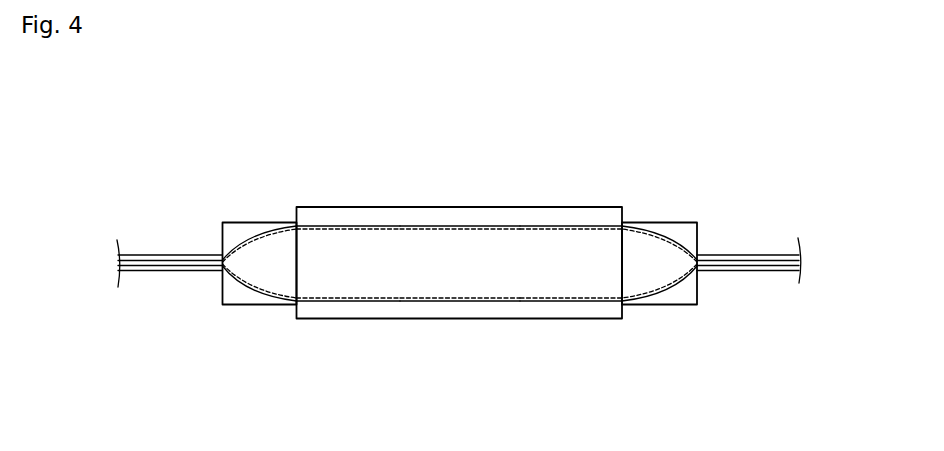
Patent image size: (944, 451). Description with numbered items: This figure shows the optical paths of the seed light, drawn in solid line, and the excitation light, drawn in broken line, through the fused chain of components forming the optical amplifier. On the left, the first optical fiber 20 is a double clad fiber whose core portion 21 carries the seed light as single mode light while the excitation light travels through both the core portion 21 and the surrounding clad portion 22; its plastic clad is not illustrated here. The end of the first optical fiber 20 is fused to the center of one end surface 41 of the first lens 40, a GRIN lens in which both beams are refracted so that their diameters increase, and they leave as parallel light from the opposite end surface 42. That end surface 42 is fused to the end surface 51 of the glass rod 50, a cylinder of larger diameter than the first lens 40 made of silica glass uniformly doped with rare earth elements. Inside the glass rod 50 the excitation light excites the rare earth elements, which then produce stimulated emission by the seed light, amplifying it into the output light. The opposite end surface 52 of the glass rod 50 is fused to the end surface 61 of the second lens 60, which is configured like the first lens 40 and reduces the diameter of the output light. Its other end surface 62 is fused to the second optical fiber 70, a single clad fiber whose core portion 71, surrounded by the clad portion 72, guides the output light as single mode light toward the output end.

The first optical fiber 20 is at (150, 270).
The core portion 21 is at (172, 255).
The clad portion 22 is at (208, 257).
The first lens 40 is at (210, 317).
The end surface 41 is at (210, 280).
The end surface 42 is at (297, 268).
The glass rod 50 is at (463, 220).
The end surface 51 is at (282, 232).
The end surface 52 is at (625, 212).
The second lens 60 is at (687, 276).
The end surface 61 is at (622, 272).
The end surface 62 is at (698, 280).
The second optical fiber 70 is at (763, 270).
The core portion 71 is at (727, 257).
The clad portion 72 is at (767, 257).